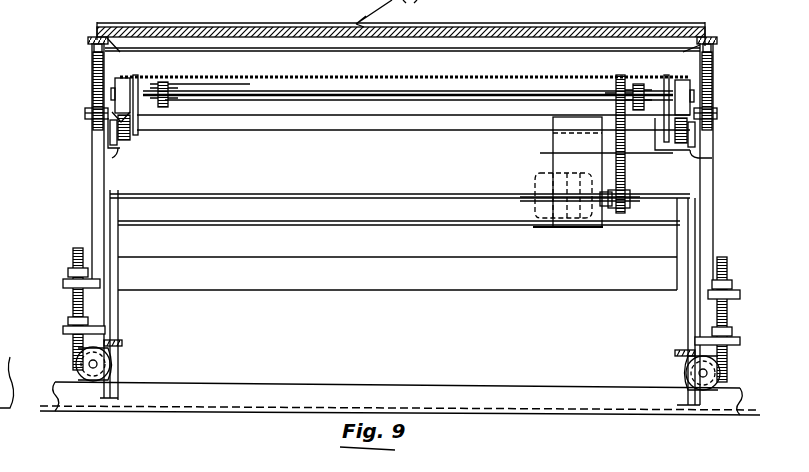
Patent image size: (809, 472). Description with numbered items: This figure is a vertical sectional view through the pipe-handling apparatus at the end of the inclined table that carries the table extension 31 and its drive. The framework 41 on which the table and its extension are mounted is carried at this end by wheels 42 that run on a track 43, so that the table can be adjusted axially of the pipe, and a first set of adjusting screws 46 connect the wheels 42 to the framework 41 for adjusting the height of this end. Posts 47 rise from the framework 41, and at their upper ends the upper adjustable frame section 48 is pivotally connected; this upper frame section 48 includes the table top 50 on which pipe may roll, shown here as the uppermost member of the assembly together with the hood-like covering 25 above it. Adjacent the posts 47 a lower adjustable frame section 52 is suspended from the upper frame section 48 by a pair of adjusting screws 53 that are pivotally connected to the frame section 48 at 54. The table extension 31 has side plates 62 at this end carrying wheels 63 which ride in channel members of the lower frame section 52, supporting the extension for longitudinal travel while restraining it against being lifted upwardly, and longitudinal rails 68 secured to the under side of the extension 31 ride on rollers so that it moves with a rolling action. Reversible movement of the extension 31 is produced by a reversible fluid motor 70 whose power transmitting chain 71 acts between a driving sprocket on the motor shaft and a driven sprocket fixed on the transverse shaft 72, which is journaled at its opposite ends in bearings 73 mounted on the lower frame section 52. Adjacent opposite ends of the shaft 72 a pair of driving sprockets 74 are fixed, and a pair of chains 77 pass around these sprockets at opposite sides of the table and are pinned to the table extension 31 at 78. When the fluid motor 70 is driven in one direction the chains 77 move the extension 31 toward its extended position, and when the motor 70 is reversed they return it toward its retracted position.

The hood 25 is at (525, 27).
The table top 50 is at (452, 27).
The upper adjustable frame section 48 is at (497, 47).
The table extension 31 is at (291, 72).
The transverse shaft 72 is at (372, 95).
The posts 47 is at (92, 166).
The framework 41 is at (360, 300).
The pivotal connection 54 is at (88, 40).
The adjusting screws 53 is at (93, 88).
The bearings 73 is at (118, 88).
The chain pin connection 78 is at (140, 78).
The chains 77 is at (167, 86).
The driving sprockets 74 is at (170, 92).
The longitudinal rails 68 is at (140, 100).
The side plates 62 is at (133, 127).
The wheels 63 is at (125, 140).
The lower adjustable frame section 52 is at (118, 148).
The reversible fluid motor 70 is at (553, 185).
The power transmitting chain 71 is at (616, 148).
The adjusting screws 46 is at (72, 300).
The wheels 42 is at (78, 372).
The track 43 is at (458, 387).